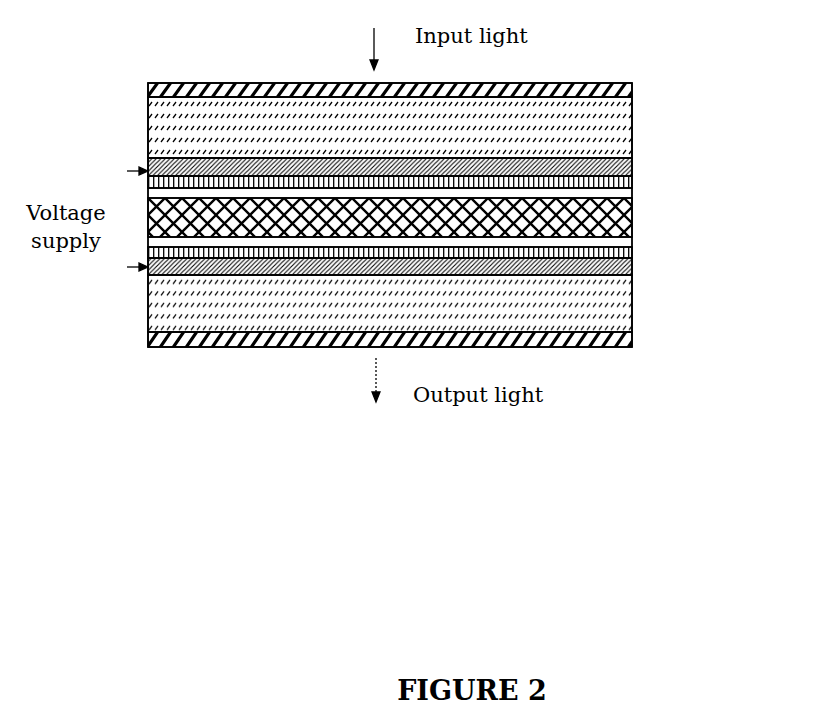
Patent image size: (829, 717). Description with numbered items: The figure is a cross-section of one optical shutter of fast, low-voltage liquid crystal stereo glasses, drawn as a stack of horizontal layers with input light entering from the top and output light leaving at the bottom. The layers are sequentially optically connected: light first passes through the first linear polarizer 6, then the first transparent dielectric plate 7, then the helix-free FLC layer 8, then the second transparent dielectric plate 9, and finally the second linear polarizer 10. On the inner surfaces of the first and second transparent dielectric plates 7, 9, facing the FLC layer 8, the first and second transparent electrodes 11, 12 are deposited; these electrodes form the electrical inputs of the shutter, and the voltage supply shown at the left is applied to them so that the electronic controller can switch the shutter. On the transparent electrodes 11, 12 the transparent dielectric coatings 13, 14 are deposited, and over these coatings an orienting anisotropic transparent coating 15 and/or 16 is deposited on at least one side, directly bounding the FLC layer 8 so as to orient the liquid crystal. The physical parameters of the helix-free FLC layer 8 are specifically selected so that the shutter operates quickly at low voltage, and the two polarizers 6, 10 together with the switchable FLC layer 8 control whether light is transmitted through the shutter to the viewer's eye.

The first linear polarizer 6 is at (630, 88).
The first transparent dielectric plate 7 is at (390, 127).
The FLC layer 8 is at (390, 217).
The second transparent dielectric plate 9 is at (390, 303).
The second linear polarizer 10 is at (632, 343).
The first transparent electrode 11 is at (627, 168).
The second transparent electrode 12 is at (627, 268).
The transparent dielectric coating 13 is at (627, 182).
The transparent dielectric coating 14 is at (627, 255).
The orienting anisotropic transparent coating 15 is at (627, 193).
The orienting anisotropic transparent coating 16 is at (626, 242).